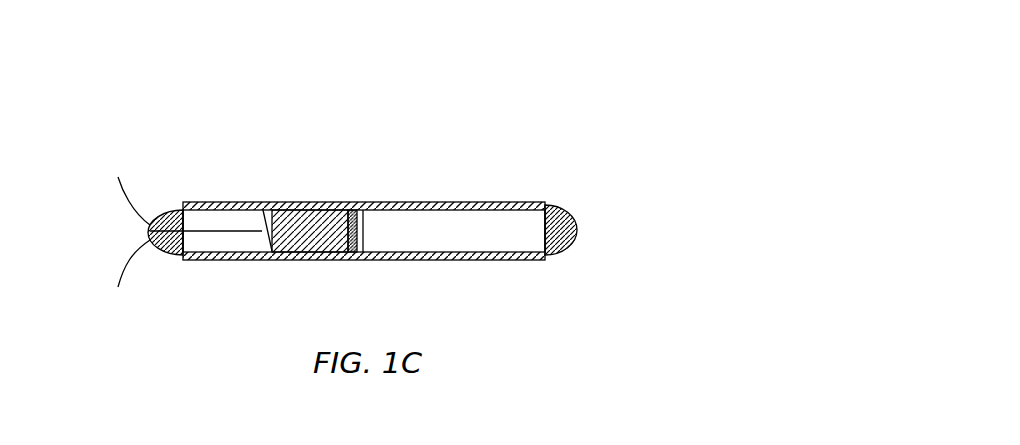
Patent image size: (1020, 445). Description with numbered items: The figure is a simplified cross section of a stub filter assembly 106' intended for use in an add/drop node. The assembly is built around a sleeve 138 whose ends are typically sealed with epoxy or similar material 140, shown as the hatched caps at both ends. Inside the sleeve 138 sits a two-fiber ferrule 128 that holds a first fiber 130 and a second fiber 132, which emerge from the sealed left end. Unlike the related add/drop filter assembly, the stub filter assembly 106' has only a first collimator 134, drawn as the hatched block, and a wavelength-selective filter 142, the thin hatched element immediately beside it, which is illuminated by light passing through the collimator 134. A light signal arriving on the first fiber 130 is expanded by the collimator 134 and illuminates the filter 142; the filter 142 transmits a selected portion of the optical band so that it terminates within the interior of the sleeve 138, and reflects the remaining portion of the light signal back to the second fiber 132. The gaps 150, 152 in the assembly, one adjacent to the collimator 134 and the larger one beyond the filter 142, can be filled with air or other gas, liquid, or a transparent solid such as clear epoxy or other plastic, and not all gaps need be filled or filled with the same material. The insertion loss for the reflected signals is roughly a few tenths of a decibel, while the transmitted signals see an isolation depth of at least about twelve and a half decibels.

The stub filter assembly 106' is at (350, 184).
The 2-fiber ferrule 128 is at (238, 218).
The first fiber 130 is at (122, 194).
The second fiber 132 is at (122, 268).
The first collimator 134 is at (313, 215).
The sleeve 138 is at (452, 201).
The epoxy or similar material 140 is at (163, 218).
The wavelength-selective filter 142 is at (353, 209).
The gap 150 is at (266, 223).
The gap 152 is at (452, 242).